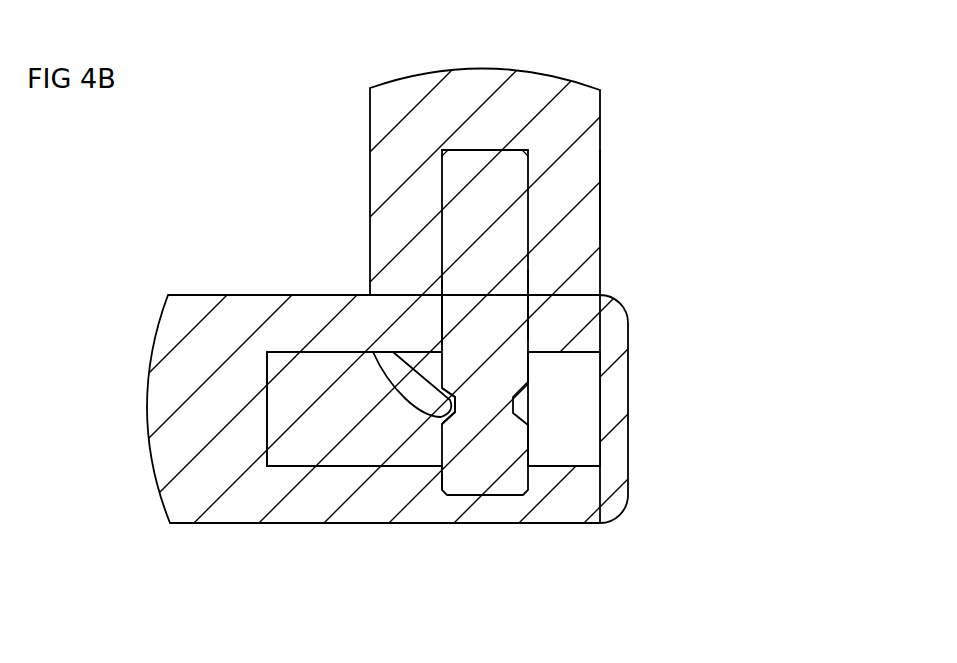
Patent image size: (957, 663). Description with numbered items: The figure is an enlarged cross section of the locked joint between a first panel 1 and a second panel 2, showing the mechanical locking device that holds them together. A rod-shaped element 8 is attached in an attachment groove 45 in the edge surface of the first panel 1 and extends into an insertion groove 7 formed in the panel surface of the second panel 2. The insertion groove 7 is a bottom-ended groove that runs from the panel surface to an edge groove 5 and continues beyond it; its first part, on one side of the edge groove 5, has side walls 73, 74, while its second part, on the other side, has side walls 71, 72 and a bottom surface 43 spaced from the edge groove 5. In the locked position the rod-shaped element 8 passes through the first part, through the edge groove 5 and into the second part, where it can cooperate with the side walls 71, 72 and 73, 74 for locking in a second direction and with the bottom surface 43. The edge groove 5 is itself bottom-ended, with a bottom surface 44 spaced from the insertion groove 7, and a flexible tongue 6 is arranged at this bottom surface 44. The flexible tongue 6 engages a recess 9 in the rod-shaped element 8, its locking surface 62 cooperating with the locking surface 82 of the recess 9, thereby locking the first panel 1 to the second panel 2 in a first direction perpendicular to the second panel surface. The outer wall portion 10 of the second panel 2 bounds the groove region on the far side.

The first panel 1 is at (597, 98).
The second panel 2 is at (207, 348).
The attachment groove 45 is at (600, 190).
The rod-shaped element 8 is at (498, 238).
The side wall of first part of insertion groove 74 is at (530, 305).
The insertion groove 7 is at (529, 338).
The side wall of first part of insertion groove 73 is at (440, 312).
The locking surface of flexible tongue 62 is at (373, 352).
The outer wall 10 is at (615, 380).
The edge groove 5 is at (562, 445).
The side wall of second part of insertion groove 72 is at (530, 488).
The bottom surface of insertion groove 43 is at (532, 524).
The recess 9 is at (460, 407).
The locking surface of recess 82 is at (462, 408).
The side wall of second part of insertion groove 71 is at (442, 478).
The flexible tongue 6 is at (348, 420).
The bottom surface of edge groove 44 is at (267, 419).